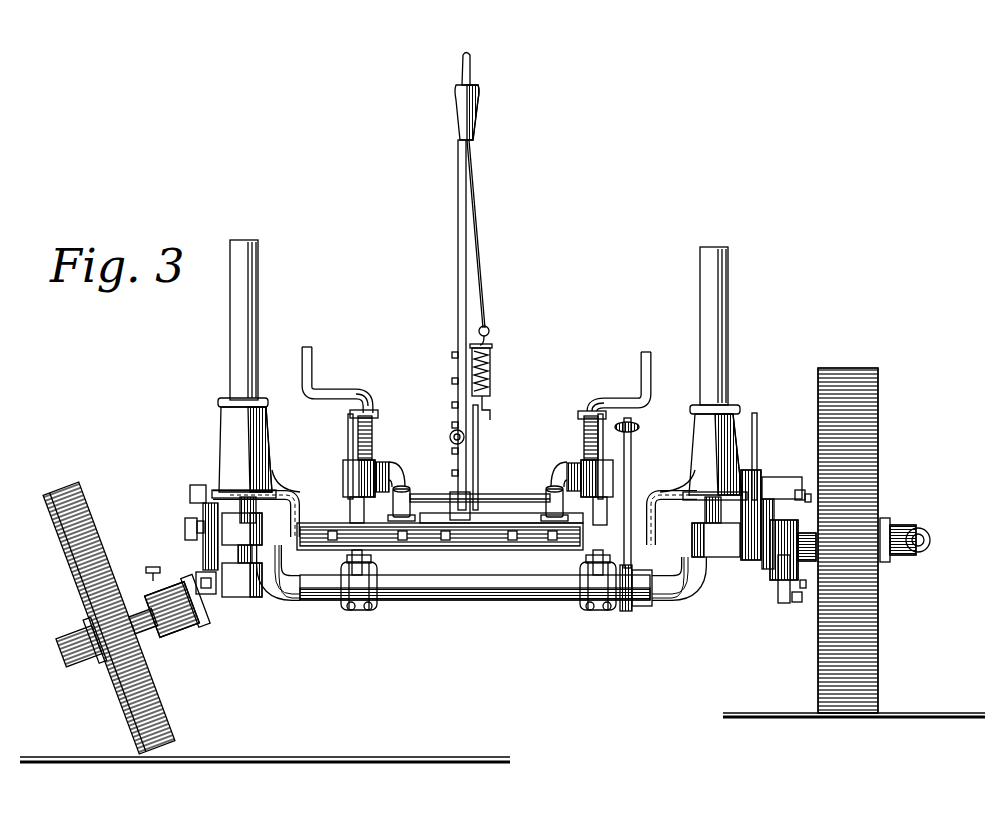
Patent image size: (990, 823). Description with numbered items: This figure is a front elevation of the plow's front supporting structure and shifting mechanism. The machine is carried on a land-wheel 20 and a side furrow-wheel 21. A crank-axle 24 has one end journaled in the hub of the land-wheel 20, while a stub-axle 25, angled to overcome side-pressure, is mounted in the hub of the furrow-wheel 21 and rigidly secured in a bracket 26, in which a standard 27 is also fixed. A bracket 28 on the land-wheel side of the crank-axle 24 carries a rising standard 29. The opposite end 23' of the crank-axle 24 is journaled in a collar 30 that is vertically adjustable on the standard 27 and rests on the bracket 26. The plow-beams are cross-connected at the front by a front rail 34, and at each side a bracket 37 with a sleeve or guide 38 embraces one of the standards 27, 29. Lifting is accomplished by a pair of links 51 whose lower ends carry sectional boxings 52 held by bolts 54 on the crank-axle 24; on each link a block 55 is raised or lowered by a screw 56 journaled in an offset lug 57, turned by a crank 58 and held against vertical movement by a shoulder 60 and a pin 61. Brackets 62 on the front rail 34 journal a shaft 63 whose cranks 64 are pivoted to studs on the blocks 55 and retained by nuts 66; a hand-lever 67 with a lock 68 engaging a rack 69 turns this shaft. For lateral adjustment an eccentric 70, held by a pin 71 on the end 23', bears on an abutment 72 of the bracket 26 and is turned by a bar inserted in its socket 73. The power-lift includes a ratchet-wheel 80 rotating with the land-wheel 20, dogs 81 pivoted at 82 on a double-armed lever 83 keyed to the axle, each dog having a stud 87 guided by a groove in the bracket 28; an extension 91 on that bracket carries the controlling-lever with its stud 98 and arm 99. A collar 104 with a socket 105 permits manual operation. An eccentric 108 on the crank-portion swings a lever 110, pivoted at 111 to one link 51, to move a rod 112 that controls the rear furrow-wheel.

The land-wheel 20 is at (880, 630).
The side furrow-wheel 21 is at (160, 689).
The opposite end of crank-axle 23' is at (174, 518).
The crank-axle 24 is at (480, 600).
The stub-axle 25 is at (200, 610).
The bracket 26 is at (220, 592).
The standard 27 is at (252, 340).
The bracket 28 is at (712, 560).
The standard 29 is at (722, 338).
The collar 30 is at (242, 529).
The front rail or angle-bar 34 is at (478, 540).
The bracket 37 is at (282, 492).
The sleeve or guide 38 is at (221, 430).
The link 51 is at (364, 558).
The boxing 52 is at (375, 605).
The bolt 54 is at (354, 612).
The block 55 is at (344, 486).
The screw 56 is at (372, 442).
The offset lug 57 is at (378, 420).
The crank 58 is at (476, 380).
The shoulder 60 is at (371, 412).
The pin 61 is at (350, 438).
The bracket 62 is at (404, 493).
The shaft 63 is at (492, 503).
The crank 64 is at (390, 478).
The nut 66 is at (392, 478).
The hand-lever 67 is at (457, 302).
The lock 68 is at (487, 416).
The rack 69 is at (478, 450).
The eccentric 70 is at (200, 558).
The pin 71 is at (186, 532).
The abutment 72 is at (200, 577).
The socket 73 is at (204, 488).
The ratchet-wheel 80 is at (797, 540).
The dog 81 is at (805, 493).
The pivot 82 is at (811, 498).
The double-armed lever 83 is at (814, 552).
The stud 87 is at (778, 530).
The extension 91 is at (750, 480).
The stud 98 is at (792, 480).
The arm 99 is at (758, 437).
The collar 104 is at (900, 530).
The socket 105 is at (920, 548).
The eccentric 108 is at (633, 608).
The lever 110 is at (632, 455).
The pivot 111 is at (705, 623).
The rod 112 is at (640, 428).